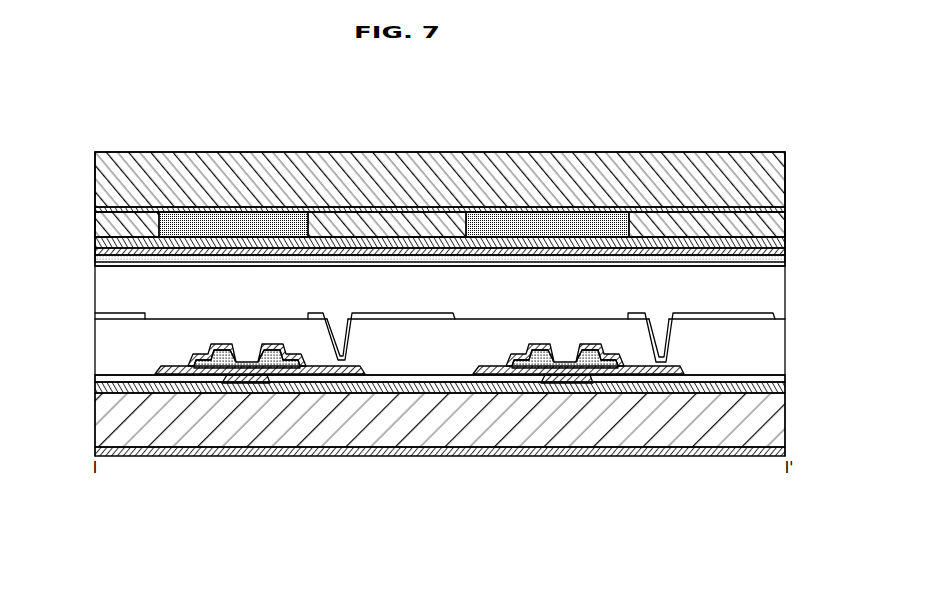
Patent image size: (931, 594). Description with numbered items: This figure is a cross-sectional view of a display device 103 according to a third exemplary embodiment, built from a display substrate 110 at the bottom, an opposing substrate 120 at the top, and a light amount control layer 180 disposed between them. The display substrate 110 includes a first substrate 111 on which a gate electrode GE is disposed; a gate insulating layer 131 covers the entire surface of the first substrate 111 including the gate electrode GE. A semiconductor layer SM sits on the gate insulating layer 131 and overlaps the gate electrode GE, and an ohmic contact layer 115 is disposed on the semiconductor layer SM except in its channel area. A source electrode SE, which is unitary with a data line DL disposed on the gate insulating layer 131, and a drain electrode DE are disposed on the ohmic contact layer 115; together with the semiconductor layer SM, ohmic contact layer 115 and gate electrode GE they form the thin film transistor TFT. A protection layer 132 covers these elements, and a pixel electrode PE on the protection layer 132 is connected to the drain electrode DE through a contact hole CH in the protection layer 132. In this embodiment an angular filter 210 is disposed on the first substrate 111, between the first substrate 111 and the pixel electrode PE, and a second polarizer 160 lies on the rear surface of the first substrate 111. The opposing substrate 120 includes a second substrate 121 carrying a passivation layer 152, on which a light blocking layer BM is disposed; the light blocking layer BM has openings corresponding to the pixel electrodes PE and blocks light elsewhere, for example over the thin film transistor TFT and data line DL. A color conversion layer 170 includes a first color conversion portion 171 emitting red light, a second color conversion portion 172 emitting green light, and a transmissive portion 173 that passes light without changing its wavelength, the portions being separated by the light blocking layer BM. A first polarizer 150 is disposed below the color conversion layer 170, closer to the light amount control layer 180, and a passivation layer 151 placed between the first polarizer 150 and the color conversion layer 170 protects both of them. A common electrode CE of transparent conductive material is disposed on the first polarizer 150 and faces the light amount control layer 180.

The display device 103 is at (100, 80).
The opposing substrate 120 is at (790, 152).
The second substrate 121 is at (315, 168).
The passivation layer 152 is at (368, 208).
The color conversion layer 170 is at (88, 221).
The first color conversion portion 171 is at (418, 223).
The second color conversion portion 172 is at (685, 225).
The transmissive portion 173 is at (125, 223).
The light blocking layer BM is at (243, 223).
The passivation layer 151 is at (97, 243).
The first polarizer 150 is at (95, 252).
The common electrode CE is at (725, 258).
The light amount control layer 180 is at (772, 290).
The display substrate 110 is at (790, 320).
The first substrate 111 is at (102, 410).
The gate insulating layer 131 is at (387, 378).
The protection layer 132 is at (437, 363).
The angular filter 210 is at (97, 385).
The second polarizer 160 is at (98, 450).
The ohmic contact layer 115 is at (240, 357).
The contact hole CH is at (342, 332).
The pixel electrode PE is at (410, 313).
The data line DL is at (167, 367).
The thin film transistor TFT is at (369, 434).
The source electrode SE is at (228, 362).
The gate electrode GE is at (246, 382).
The semiconductor layer SM is at (270, 366).
The drain electrode DE is at (290, 356).